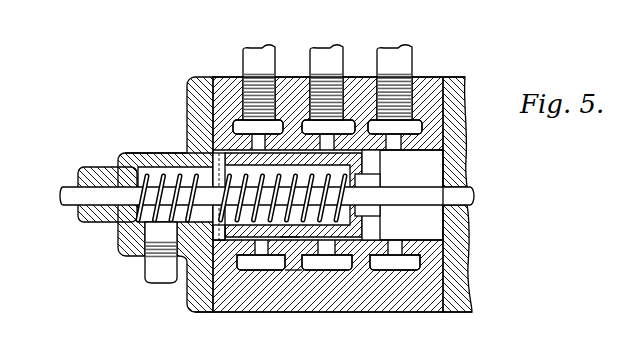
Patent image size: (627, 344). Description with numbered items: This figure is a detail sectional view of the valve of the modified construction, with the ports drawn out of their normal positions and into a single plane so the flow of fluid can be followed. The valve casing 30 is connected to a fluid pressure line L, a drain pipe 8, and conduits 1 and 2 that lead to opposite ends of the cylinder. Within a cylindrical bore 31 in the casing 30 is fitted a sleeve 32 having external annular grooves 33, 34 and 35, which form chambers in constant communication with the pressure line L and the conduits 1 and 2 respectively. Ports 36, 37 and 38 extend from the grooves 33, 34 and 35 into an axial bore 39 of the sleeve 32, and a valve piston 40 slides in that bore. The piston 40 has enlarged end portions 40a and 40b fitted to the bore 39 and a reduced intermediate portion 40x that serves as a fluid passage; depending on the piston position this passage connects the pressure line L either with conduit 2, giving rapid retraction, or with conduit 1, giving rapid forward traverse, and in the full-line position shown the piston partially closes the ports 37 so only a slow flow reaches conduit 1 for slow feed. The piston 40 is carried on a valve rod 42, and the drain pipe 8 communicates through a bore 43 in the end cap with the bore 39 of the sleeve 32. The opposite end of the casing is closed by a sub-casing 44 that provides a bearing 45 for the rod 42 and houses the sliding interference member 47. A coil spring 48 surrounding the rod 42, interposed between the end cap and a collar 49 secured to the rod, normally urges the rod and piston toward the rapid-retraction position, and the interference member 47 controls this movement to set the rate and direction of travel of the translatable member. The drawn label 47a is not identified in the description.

The conduit 1 is at (243, 62).
The fluid pressure line L is at (322, 57).
The conduit 2 is at (412, 62).
The drain pipe 8 is at (152, 273).
The valve casing 30 is at (258, 303).
The cylindrical bore 31 is at (273, 300).
The sleeve 32 is at (435, 142).
The annular groove 33 is at (327, 263).
The annular groove 34 is at (261, 263).
The annular groove 35 is at (395, 263).
The port 36 is at (328, 142).
The port 37 is at (258, 142).
The port 38 is at (396, 142).
The axial bore 39 is at (466, 160).
The valve piston 40 is at (380, 162).
The enlarged end portion 40a is at (195, 266).
The enlarged end portion 40b is at (382, 237).
The reduced intermediate portion 40x is at (288, 240).
The valve rod 42 is at (63, 200).
The bore 43 is at (145, 220).
The sub-casing 44 is at (466, 96).
The bearing 45 is at (466, 213).
The interference member 47 is at (187, 108).
The gland 47a is at (101, 205).
The coil spring 48 is at (165, 180).
The collar 49 is at (366, 192).